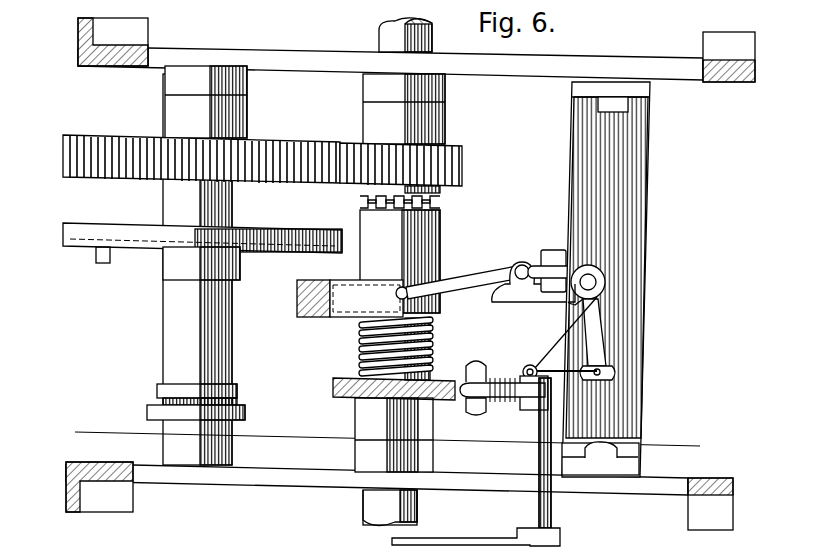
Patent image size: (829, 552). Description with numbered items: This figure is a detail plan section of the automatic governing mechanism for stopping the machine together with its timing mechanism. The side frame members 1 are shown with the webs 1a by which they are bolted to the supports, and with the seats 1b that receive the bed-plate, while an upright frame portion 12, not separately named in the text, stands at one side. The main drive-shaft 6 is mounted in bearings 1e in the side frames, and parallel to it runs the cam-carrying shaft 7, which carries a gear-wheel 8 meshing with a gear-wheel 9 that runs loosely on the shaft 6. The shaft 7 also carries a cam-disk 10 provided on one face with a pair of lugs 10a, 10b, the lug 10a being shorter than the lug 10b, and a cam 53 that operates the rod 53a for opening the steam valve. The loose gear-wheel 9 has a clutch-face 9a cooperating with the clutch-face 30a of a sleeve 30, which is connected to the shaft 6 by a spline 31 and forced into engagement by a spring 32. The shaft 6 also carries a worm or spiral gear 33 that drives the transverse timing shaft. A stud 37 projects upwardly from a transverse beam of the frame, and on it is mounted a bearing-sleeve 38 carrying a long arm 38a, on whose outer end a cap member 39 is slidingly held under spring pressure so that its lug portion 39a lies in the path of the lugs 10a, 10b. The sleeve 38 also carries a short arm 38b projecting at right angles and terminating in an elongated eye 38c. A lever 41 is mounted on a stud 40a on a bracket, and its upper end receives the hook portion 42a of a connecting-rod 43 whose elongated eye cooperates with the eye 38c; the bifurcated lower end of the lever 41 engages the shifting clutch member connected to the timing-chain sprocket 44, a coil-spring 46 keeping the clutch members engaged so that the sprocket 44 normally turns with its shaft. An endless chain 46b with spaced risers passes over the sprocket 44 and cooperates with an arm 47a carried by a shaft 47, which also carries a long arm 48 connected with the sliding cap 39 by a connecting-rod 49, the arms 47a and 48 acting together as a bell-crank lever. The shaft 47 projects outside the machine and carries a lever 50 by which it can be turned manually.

The side frame member 1 is at (313, 62).
The web 1a is at (149, 38).
The seat 1b is at (248, 90).
The bearing 1e is at (445, 91).
The main drive-shaft 6 is at (382, 33).
The cam-carrying shaft 7 is at (382, 269).
The gear-wheel 8 is at (97, 148).
The gear-wheel 9 is at (463, 165).
The clutch-face 9a is at (440, 206).
The cam-disk 10 is at (120, 233).
The lug 10a is at (103, 263).
The lug 10b is at (270, 268).
The standard 12 is at (627, 177).
The sleeve 30 is at (415, 252).
The clutch-face 30a is at (360, 206).
The spline 31 is at (366, 325).
The spring 32 is at (368, 356).
The worm or spiral gear 33 is at (342, 398).
The stud 37 is at (592, 282).
The bearing-sleeve 38 is at (601, 293).
The long arm 38a is at (533, 285).
The short arm 38b is at (602, 340).
The elongated eye 38c is at (612, 378).
The cap member 39 is at (369, 298).
The lug portion 39a is at (298, 290).
The stud 40a is at (556, 342).
The lever 41 is at (524, 370).
The hook portion 42a is at (521, 380).
The connecting-rod 43 is at (537, 412).
The timing-chain sprocket 44 is at (480, 383).
The coil-spring 46 is at (492, 402).
The endless chain 46b is at (470, 405).
The shaft 47 is at (552, 508).
The arm 47a is at (470, 370).
The long arm 48 is at (541, 262).
The connecting-rod 49 is at (470, 284).
The lever 50 is at (520, 535).
The cam 53 is at (160, 410).
The rod 53a is at (212, 390).